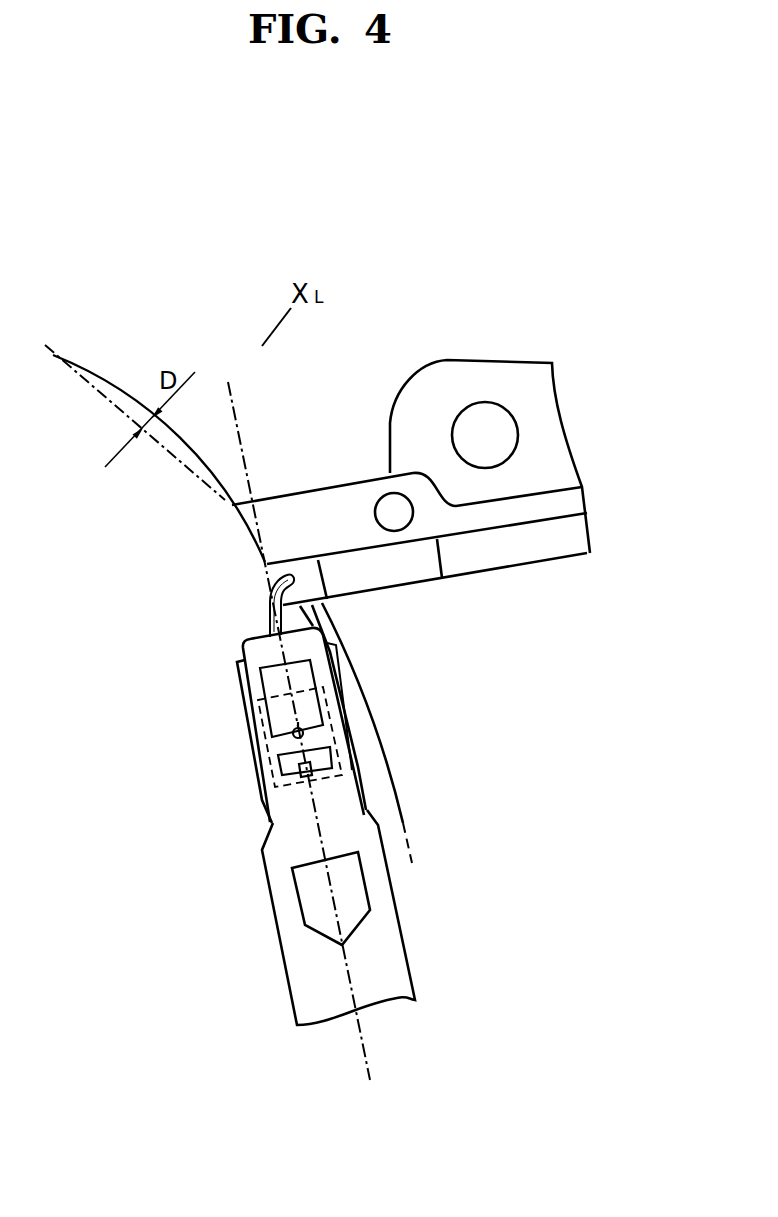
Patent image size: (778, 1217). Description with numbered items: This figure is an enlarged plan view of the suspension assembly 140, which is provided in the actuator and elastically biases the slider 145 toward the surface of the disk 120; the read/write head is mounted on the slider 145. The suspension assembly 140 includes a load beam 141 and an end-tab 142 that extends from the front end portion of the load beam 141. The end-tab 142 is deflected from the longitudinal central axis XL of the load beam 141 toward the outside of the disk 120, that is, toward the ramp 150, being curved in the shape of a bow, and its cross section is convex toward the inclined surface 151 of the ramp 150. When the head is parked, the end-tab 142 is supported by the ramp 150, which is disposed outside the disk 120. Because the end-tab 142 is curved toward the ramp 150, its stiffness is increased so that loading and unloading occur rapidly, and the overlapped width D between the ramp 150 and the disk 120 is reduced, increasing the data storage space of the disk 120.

The disk 120 is at (367, 798).
The suspension assembly 140 is at (226, 867).
The load beam 141 is at (282, 805).
The end-tab 142 is at (270, 608).
The slider 145 is at (337, 712).
The ramp 150 is at (353, 507).
The inclined surface 151 is at (313, 557).